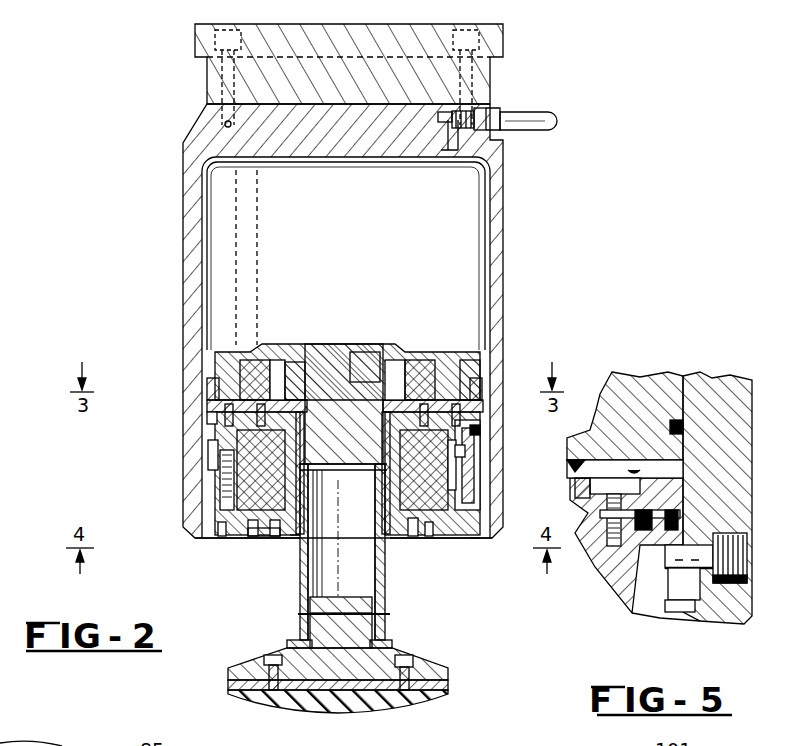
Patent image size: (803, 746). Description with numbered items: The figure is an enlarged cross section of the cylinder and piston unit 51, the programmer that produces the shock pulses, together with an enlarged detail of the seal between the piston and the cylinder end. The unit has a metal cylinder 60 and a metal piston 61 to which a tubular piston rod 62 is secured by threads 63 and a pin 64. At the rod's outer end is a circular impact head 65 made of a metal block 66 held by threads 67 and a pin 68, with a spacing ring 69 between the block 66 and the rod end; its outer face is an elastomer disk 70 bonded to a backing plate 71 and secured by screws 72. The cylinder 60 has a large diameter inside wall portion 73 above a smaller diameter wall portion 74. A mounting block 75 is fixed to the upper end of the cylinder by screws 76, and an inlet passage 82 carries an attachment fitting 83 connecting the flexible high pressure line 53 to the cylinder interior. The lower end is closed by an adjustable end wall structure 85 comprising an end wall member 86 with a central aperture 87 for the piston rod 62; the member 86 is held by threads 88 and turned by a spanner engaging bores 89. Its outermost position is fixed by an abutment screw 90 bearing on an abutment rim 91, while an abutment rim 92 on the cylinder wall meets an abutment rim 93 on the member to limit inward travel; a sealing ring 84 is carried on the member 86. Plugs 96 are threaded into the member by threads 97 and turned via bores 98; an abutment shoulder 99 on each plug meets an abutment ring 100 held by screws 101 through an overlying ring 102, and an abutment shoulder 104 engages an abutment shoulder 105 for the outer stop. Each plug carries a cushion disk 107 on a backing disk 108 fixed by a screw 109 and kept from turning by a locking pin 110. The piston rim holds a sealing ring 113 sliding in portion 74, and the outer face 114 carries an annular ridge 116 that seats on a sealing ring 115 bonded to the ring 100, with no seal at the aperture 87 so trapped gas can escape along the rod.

In FIG. 2, the cylinder and piston unit 51 is at (138, 208).
In FIG. 2, the flexible high pressure line 53 is at (535, 135).
In FIG. 2, the cylinder 60 is at (505, 247).
In FIG. 5, the cylinder 60 is at (724, 380).
In FIG. 2, the piston 61 is at (365, 360).
In FIG. 2, the piston rod 62 is at (388, 592).
In FIG. 2, the threads 63 is at (345, 468).
In FIG. 2, the pin 64 is at (350, 475).
In FIG. 2, the impact head 65 is at (458, 670).
In FIG. 2, the block 66 is at (240, 660).
In FIG. 2, the pin 67 is at (392, 616).
In FIG. 2, the pin 68 is at (318, 612).
In FIG. 2, the spacing ring 69 is at (287, 643).
In FIG. 2, the disk 70 is at (262, 706).
In FIG. 2, the backing plate 71 is at (452, 688).
In FIG. 2, the screws 72 is at (415, 655).
In FIG. 2, the inside wall portion 73 is at (490, 232).
In FIG. 2, the wall portion 74 is at (470, 362).
In FIG. 2, the mounting block 75 is at (207, 90).
In FIG. 2, the screws 76 is at (460, 28).
In FIG. 2, the inlet passage 82 is at (452, 155).
In FIG. 2, the attachment fitting 83 is at (500, 110).
In FIG. 2, the sealing ring 84 is at (230, 428).
In FIG. 5, the sealing ring 84 is at (690, 540).
In FIG. 2, the end wall structure 85 is at (468, 546).
In FIG. 2, the end wall member 86 is at (204, 546).
In FIG. 2, the aperture 87 is at (292, 543).
In FIG. 2, the threads 88 is at (482, 498).
In FIG. 2, the bores 89 is at (225, 548).
In FIG. 2, the abutment screw 90 is at (488, 430).
In FIG. 5, the abutment screw 90 is at (752, 585).
In FIG. 2, the abutment rim 91 is at (486, 453).
In FIG. 5, the abutment rim 91 is at (672, 572).
In FIG. 2, the abutment rim 92 is at (220, 450).
In FIG. 5, the abutment rim 92 is at (690, 612).
In FIG. 2, the abutment rim 93 is at (256, 500).
In FIG. 2, the plugs 96 is at (212, 525).
In FIG. 2, the threads 97 is at (250, 538).
In FIG. 2, the bores 98 is at (418, 540).
In FIG. 2, the abutment shoulder 99 is at (362, 455).
In FIG. 2, the abutment ring 100 is at (492, 395).
In FIG. 2, the screws 101 is at (482, 378).
In FIG. 5, the screws 101 is at (612, 440).
In FIG. 2, the overlying ring 102 is at (405, 365).
In FIG. 2, the abutment shoulder 104 is at (485, 476).
In FIG. 2, the abutment shoulder 105 is at (245, 462).
In FIG. 2, the cushion disk 107 is at (262, 358).
In FIG. 2, the backing disk 108 is at (215, 372).
In FIG. 2, the screw 109 is at (277, 362).
In FIG. 2, the locking pin 110 is at (445, 360).
In FIG. 2, the sealing ring 113 is at (218, 398).
In FIG. 5, the sealing ring 113 is at (662, 472).
In FIG. 2, the outer face 114 is at (318, 362).
In FIG. 2, the sealing ring 115 is at (216, 420).
In FIG. 5, the sealing ring 115 is at (634, 548).
In FIG. 2, the annular ridge 116 is at (225, 410).
In FIG. 5, the annular ridge 116 is at (630, 482).